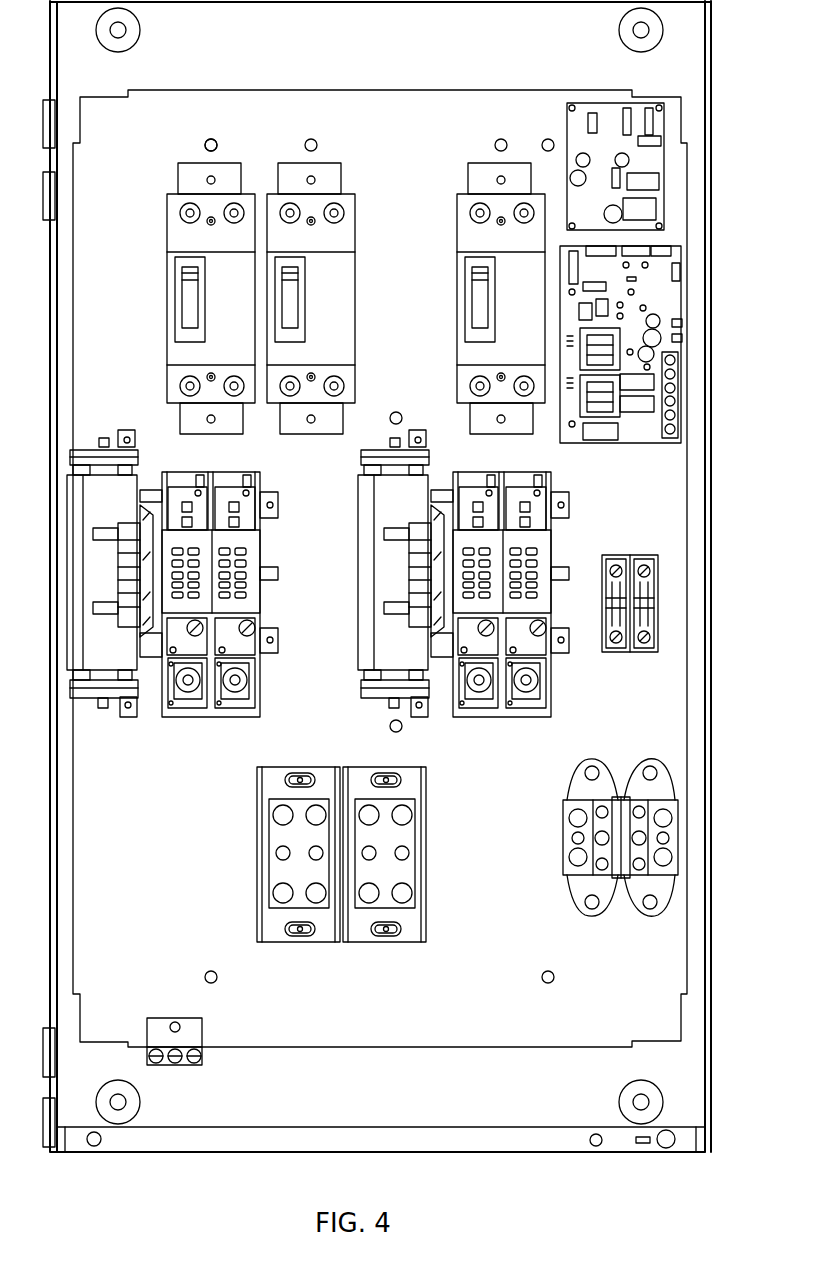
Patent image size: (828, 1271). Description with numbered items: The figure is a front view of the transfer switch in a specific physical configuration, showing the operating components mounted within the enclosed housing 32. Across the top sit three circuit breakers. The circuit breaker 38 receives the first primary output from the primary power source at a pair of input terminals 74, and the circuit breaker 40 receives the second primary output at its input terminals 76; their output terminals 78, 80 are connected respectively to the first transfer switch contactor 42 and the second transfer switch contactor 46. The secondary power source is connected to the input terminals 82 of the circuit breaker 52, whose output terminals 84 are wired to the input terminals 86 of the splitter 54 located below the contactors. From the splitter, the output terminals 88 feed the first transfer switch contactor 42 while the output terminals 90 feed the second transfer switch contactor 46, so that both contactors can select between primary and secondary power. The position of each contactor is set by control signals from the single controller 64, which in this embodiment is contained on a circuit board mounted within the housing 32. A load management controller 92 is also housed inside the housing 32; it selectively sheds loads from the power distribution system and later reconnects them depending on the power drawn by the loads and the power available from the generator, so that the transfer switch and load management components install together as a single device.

The housing 32 is at (711, 523).
The circuit breaker 38 is at (167, 303).
The circuit breaker 40 is at (457, 303).
The circuit breaker 52 is at (356, 228).
The first transfer switch contactor 42 is at (270, 540).
The second transfer switch contactor 46 is at (561, 540).
The splitter 54 is at (426, 830).
The controller 64 is at (657, 297).
The input terminals 74 is at (226, 205).
The input terminals 76 is at (514, 205).
The output terminals 78 is at (232, 392).
The output terminals 80 is at (468, 386).
The input terminals 82 is at (333, 203).
The output terminals 84 is at (343, 385).
The input terminals 86 is at (369, 805).
The output terminals 88 is at (369, 903).
The output terminals 90 is at (402, 903).
The load management controller 92 is at (650, 158).